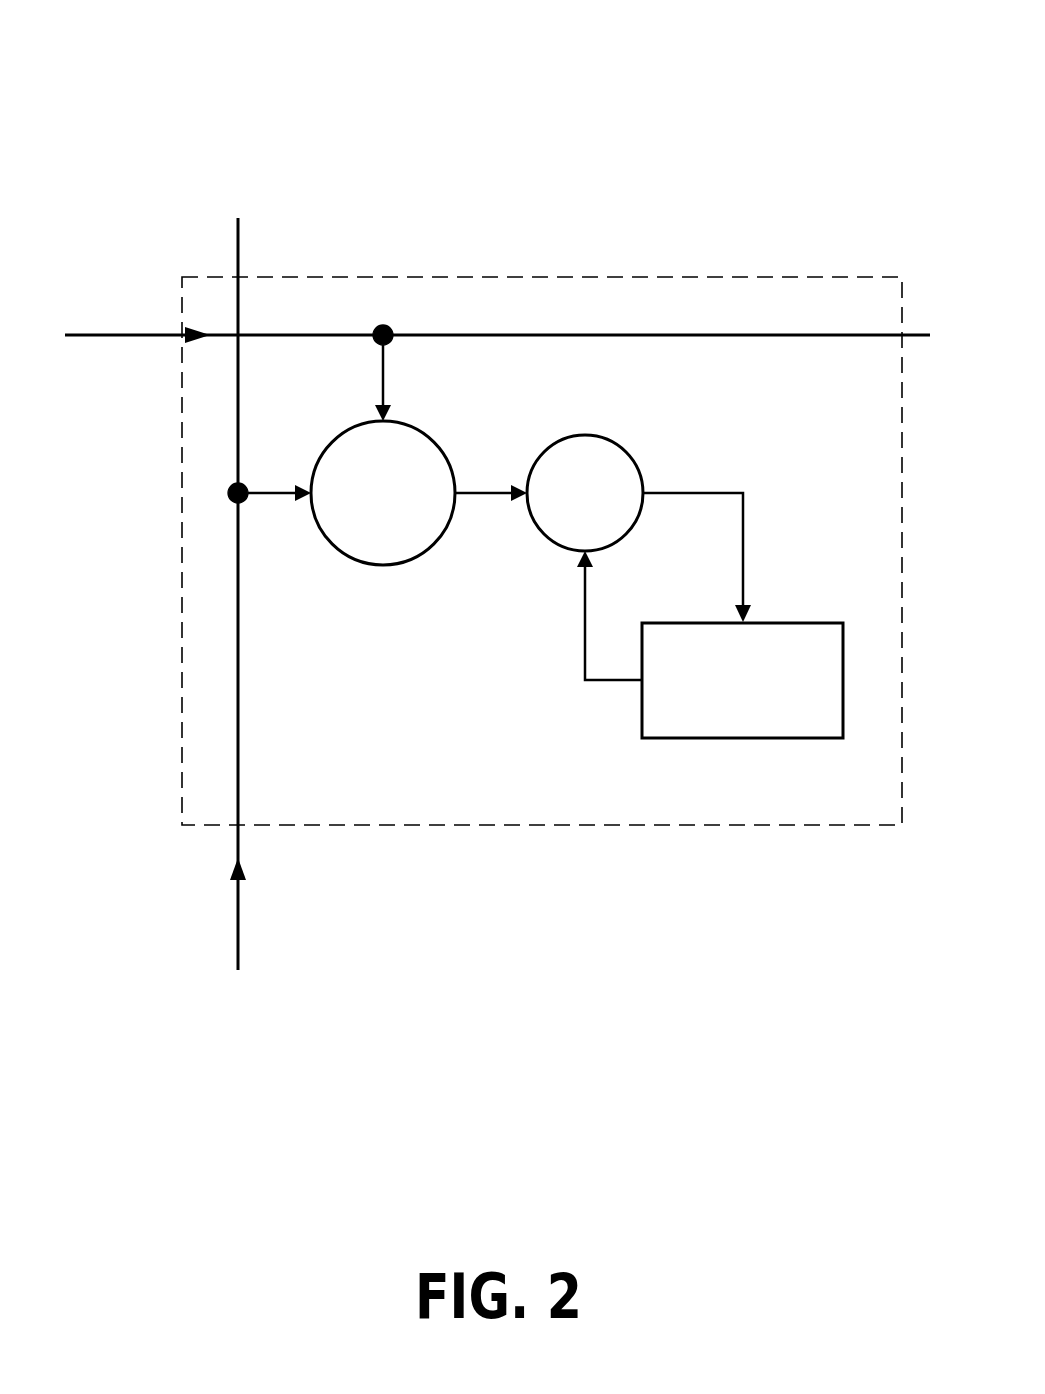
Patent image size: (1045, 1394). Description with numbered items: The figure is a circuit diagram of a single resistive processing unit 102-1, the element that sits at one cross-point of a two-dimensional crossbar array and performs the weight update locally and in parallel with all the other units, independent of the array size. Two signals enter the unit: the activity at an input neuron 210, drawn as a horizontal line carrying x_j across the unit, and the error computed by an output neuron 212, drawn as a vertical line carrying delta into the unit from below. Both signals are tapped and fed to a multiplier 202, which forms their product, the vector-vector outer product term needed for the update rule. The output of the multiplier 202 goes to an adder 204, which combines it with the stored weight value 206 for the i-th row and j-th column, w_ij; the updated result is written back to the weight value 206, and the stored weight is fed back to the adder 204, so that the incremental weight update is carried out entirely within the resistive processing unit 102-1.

The resistive processing unit 102-1 is at (128, 29).
The multiplier 202 is at (442, 442).
The adder 204 is at (638, 461).
The weight value 206 is at (785, 622).
The activity at an input neuron 210 is at (146, 338).
The error computed by an output neuron 212 is at (238, 262).